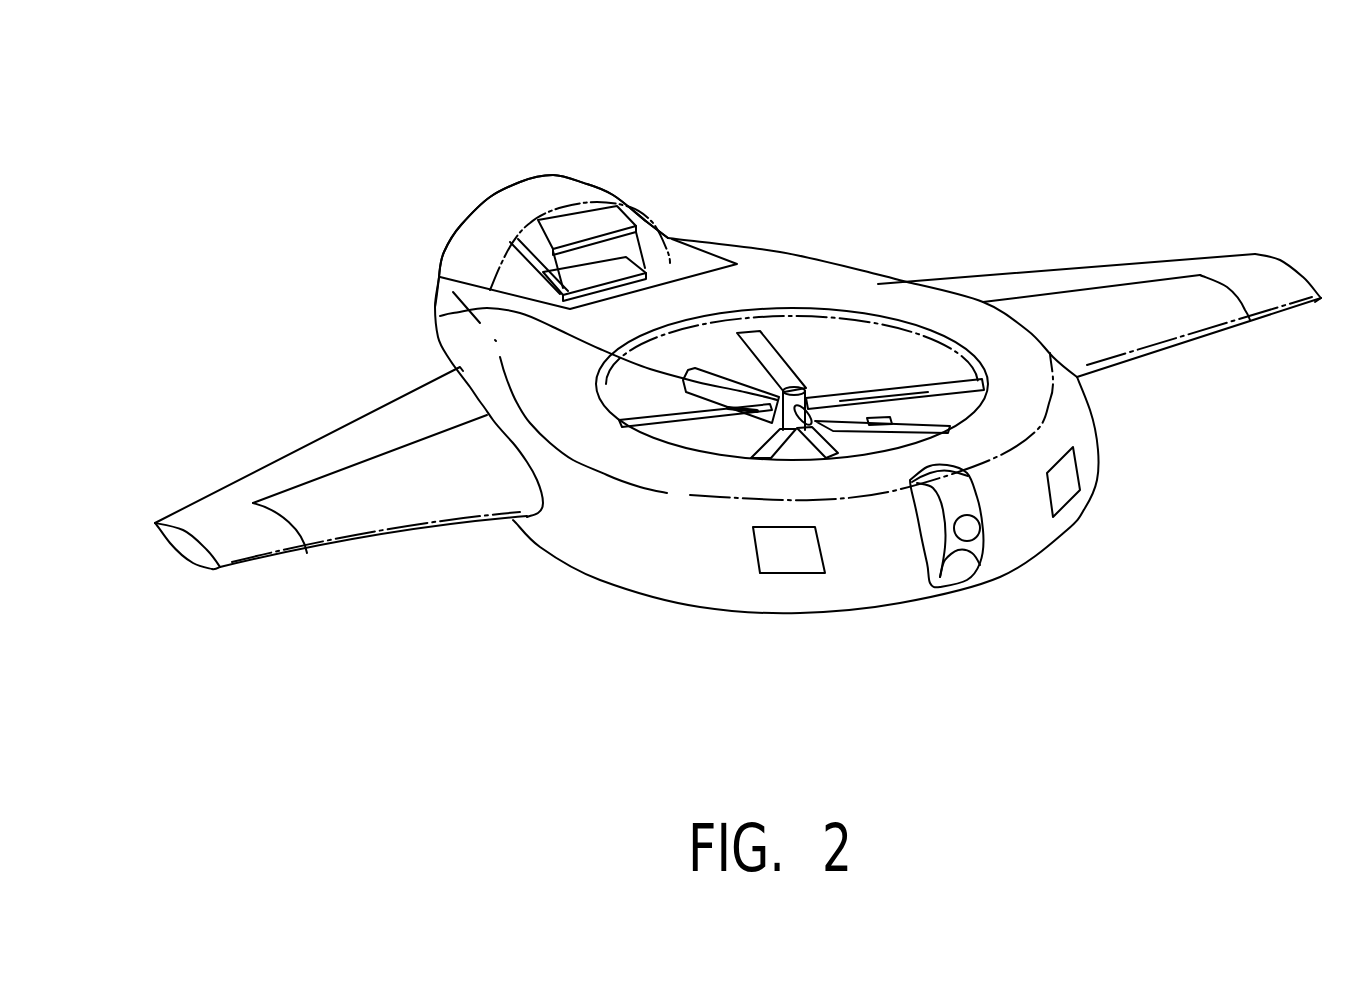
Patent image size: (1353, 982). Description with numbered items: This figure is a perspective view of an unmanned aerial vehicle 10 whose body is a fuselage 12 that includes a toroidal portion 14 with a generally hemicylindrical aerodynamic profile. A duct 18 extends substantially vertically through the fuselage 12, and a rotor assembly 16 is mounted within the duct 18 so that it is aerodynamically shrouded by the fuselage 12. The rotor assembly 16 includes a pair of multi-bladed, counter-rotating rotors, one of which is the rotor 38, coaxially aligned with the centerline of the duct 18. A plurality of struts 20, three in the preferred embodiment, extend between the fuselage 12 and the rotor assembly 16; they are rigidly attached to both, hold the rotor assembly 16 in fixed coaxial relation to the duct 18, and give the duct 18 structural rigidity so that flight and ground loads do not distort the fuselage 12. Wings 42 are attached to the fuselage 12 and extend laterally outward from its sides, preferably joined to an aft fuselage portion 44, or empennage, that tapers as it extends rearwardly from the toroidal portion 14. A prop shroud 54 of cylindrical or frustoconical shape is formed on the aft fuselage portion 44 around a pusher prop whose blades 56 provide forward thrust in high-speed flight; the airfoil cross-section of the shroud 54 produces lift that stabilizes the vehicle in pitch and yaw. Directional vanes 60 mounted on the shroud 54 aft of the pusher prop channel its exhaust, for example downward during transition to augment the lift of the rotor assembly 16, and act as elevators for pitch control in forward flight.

The unmanned aerial vehicle 10 is at (697, 133).
The fuselage 12 is at (1007, 343).
The toroidal portion 14 is at (1043, 533).
The rotor assembly 16 is at (810, 383).
The duct 18 is at (793, 343).
The struts 20 is at (440, 313).
The rotor 38 is at (918, 393).
The wings 42 is at (1245, 277).
The aft fuselage portion 44 is at (686, 262).
The prop shroud 54 is at (567, 183).
The blades 56 is at (533, 262).
The directional vanes 60 is at (563, 233).